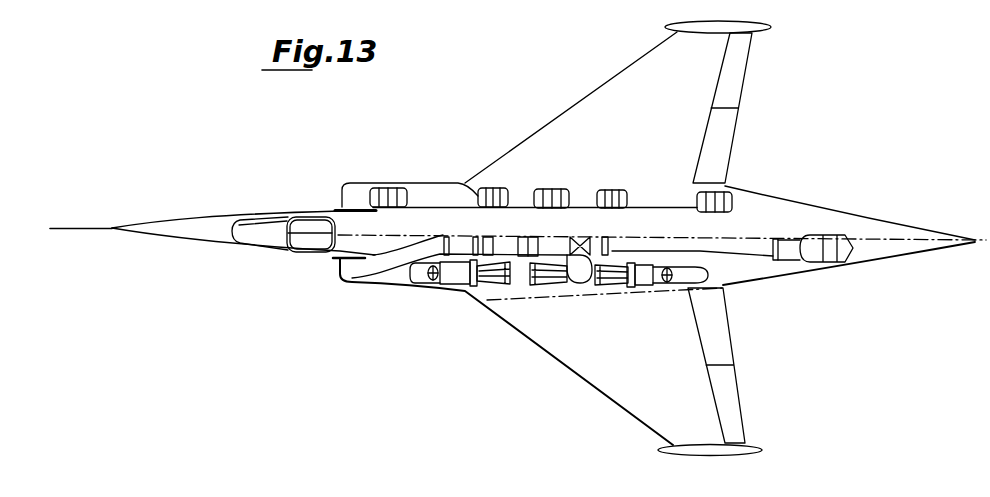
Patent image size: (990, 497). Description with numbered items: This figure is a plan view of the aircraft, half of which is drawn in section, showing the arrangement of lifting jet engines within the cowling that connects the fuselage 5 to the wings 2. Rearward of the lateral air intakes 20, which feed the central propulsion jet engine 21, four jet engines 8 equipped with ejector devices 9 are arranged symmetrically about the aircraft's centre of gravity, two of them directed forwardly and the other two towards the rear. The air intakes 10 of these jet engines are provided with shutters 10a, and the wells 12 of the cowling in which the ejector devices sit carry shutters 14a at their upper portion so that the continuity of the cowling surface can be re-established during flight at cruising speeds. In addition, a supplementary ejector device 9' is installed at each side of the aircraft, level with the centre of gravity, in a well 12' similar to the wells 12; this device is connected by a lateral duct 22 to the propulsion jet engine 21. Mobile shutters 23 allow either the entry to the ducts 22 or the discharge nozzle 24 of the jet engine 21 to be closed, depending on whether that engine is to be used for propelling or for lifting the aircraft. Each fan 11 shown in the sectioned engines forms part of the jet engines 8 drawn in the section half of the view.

The wings 2 is at (623, 85).
The fuselage 5 is at (790, 212).
The jet engines 8 is at (463, 278).
The ejector devices 9 is at (549, 300).
The supplementary ejector device 9' is at (549, 301).
The air intakes 10 is at (385, 189).
The shutters 10a is at (413, 188).
The fan 11 is at (422, 277).
The wells 12 is at (561, 178).
The well 12' is at (561, 179).
The shutters 14a is at (463, 182).
The lateral air intakes 20 is at (358, 270).
The central propulsion jet engine 21 is at (528, 246).
The lateral duct 22 is at (582, 283).
The mobile shutters 23 is at (578, 250).
The discharge nozzle 24 is at (748, 250).